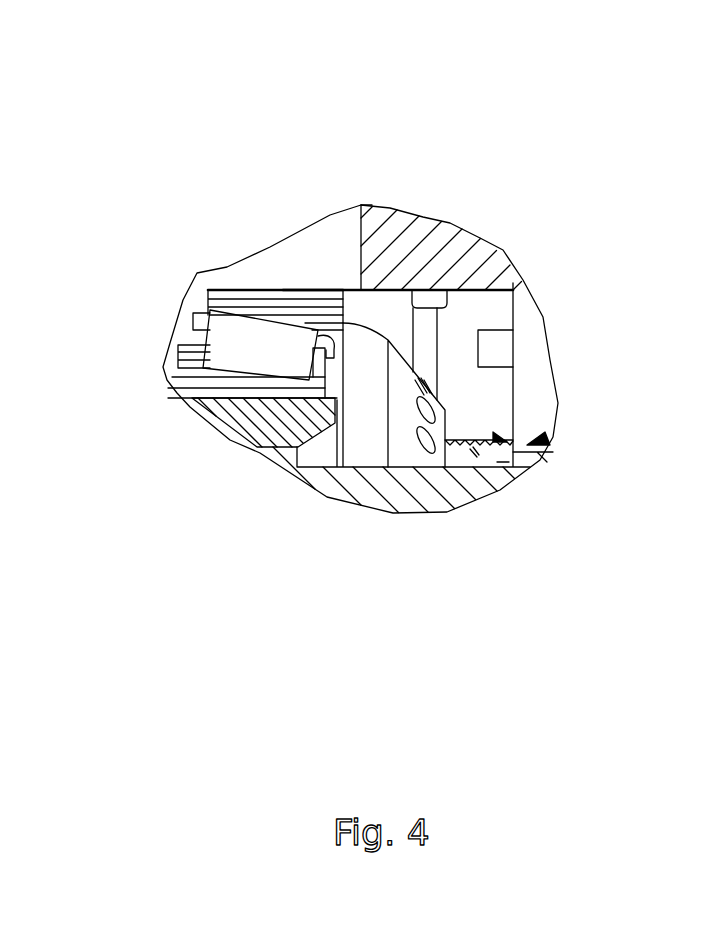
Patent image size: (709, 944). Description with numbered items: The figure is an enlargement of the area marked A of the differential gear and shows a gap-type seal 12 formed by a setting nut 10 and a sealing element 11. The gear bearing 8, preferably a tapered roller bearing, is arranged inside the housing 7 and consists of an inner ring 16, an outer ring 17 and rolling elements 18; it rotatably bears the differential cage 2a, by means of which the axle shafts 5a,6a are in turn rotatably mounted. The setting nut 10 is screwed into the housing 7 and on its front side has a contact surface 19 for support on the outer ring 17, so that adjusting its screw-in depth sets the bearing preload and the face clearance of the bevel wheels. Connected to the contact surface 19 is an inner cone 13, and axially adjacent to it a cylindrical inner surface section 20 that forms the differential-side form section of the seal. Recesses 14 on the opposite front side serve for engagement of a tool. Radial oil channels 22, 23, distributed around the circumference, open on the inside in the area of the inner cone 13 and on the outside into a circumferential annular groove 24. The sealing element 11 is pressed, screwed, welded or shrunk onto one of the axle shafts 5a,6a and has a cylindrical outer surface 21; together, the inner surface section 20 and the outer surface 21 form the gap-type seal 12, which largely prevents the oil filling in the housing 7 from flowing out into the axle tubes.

The housing 7 is at (463, 290).
The gear bearing 8 is at (283, 287).
The enlarged area A is at (369, 205).
The outer ring 17 is at (293, 307).
The rolling elements 18 is at (260, 343).
The inner ring 16 is at (203, 390).
The differential cage 2a is at (273, 427).
The setting nut 10 is at (473, 310).
The annular groove 24 is at (457, 287).
The contact surface 19 is at (352, 303).
The oil channel 23 is at (412, 288).
The recess 14 is at (498, 358).
The inner cone 13 is at (405, 362).
The oil channel 22 is at (425, 432).
The cylindrical inner surface section 20 is at (478, 450).
The cylindrical outer surface 21 is at (492, 441).
The gap-type seal 12 is at (552, 440).
The sealing element 11 is at (513, 453).
The axle shafts 5a,6a is at (503, 462).